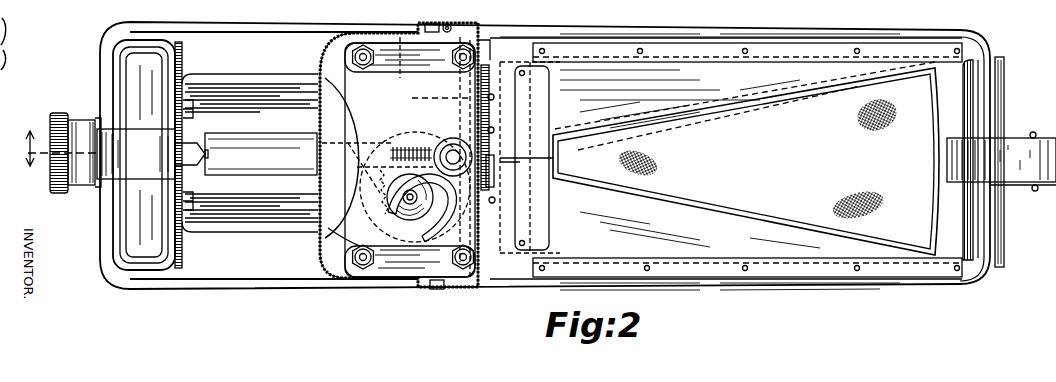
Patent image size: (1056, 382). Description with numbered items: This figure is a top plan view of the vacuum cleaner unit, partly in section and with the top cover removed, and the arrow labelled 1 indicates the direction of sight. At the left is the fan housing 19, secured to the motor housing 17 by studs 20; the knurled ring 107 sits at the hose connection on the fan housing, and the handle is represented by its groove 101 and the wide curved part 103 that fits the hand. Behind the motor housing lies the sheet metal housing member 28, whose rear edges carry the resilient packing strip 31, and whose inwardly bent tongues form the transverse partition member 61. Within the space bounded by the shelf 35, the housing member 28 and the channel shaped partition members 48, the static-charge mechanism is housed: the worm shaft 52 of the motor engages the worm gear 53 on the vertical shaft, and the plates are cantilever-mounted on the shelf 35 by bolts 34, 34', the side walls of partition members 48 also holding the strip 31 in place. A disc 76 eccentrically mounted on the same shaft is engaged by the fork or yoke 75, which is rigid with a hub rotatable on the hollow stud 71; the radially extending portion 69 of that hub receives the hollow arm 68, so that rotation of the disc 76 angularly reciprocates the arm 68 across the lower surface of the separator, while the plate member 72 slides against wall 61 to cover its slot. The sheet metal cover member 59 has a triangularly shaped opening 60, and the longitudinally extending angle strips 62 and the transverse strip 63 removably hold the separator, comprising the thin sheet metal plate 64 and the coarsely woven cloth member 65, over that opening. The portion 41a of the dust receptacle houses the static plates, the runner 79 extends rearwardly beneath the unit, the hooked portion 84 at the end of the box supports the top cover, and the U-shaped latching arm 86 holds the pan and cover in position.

The direction arrow 1 is at (60, 138).
The motor housing 17 is at (233, 224).
The fan housing 19 is at (132, 61).
The studs 20 is at (194, 113).
The sheet metal housing member 28 is at (330, 74).
The strip of resilient material 31 is at (430, 290).
The bolts 34 is at (331, 158).
The bolts 34' is at (466, 179).
The shelf 35 is at (340, 230).
The portion of dust receptacle 41a is at (447, 25).
The channel shaped partition members 48 is at (428, 97).
The worm shaft 52 is at (405, 146).
The worm gear 53 is at (366, 187).
The sheet metal cover member 59 is at (383, 268).
The triangularly shaped opening 60 is at (735, 213).
The transverse partition member 61 is at (482, 62).
The longitudinally extending angle strips 62 is at (905, 58).
The transverse strip 63 is at (549, 240).
The thin sheet metal plate 64 is at (568, 78).
The coarsely woven cloth member 65 is at (770, 118).
The hollow arm 68 is at (683, 127).
The radially extending portion of hub 69 is at (498, 160).
The hollow stud 71 is at (452, 150).
The plate member 72 is at (477, 135).
The fork or yoke 75 is at (450, 218).
The disc 76 is at (413, 222).
The runner 79 is at (738, 293).
The hooked portion 84 is at (1004, 245).
The U-shaped arm 86 is at (1010, 152).
The groove 101 is at (198, 155).
The wide curved part 103 is at (252, 140).
The knurled ring 107 is at (68, 118).